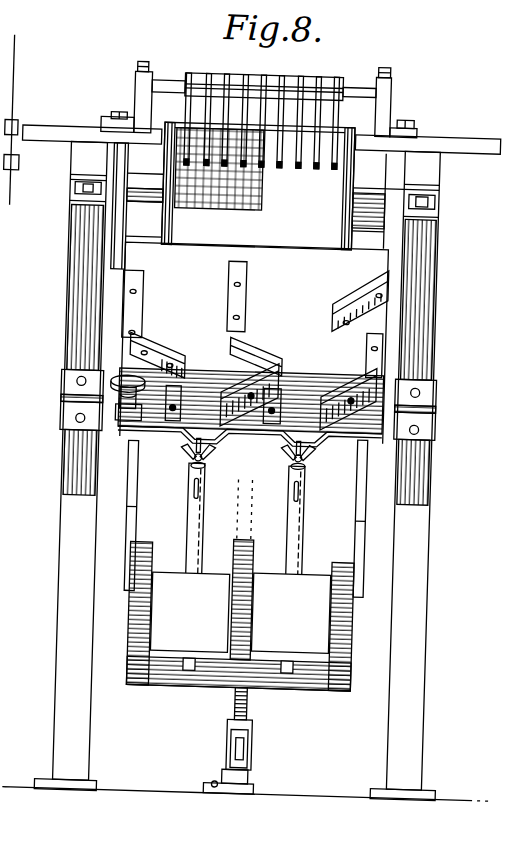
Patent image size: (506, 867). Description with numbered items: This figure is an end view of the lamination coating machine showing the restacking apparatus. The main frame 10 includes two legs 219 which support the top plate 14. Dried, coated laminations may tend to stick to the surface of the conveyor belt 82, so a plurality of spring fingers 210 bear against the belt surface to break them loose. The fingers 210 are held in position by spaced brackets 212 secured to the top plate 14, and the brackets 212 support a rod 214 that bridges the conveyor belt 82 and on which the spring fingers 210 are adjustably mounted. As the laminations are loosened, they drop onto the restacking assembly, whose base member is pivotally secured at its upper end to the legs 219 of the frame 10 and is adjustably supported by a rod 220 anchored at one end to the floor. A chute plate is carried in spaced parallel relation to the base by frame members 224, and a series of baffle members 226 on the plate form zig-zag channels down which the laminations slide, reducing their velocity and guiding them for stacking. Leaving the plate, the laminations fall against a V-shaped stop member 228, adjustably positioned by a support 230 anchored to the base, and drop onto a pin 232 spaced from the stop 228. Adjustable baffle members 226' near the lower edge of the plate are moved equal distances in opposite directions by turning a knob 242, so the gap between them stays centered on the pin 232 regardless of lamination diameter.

The frame 10 is at (253, 471).
The top plate 14 is at (463, 139).
The conveyor belt 82 is at (327, 179).
The spring fingers 210 is at (247, 108).
The brackets 212 is at (125, 78).
The rod 214 is at (346, 82).
The legs 219 is at (63, 599).
The rod 220 is at (243, 706).
The frame members 224 is at (131, 494).
The baffle members 226 is at (255, 321).
The adjustable baffle members 226' is at (274, 379).
The V-shaped stop member 228 is at (267, 466).
The support 230 is at (290, 527).
The pin 232 is at (187, 452).
The knob 242 is at (110, 385).